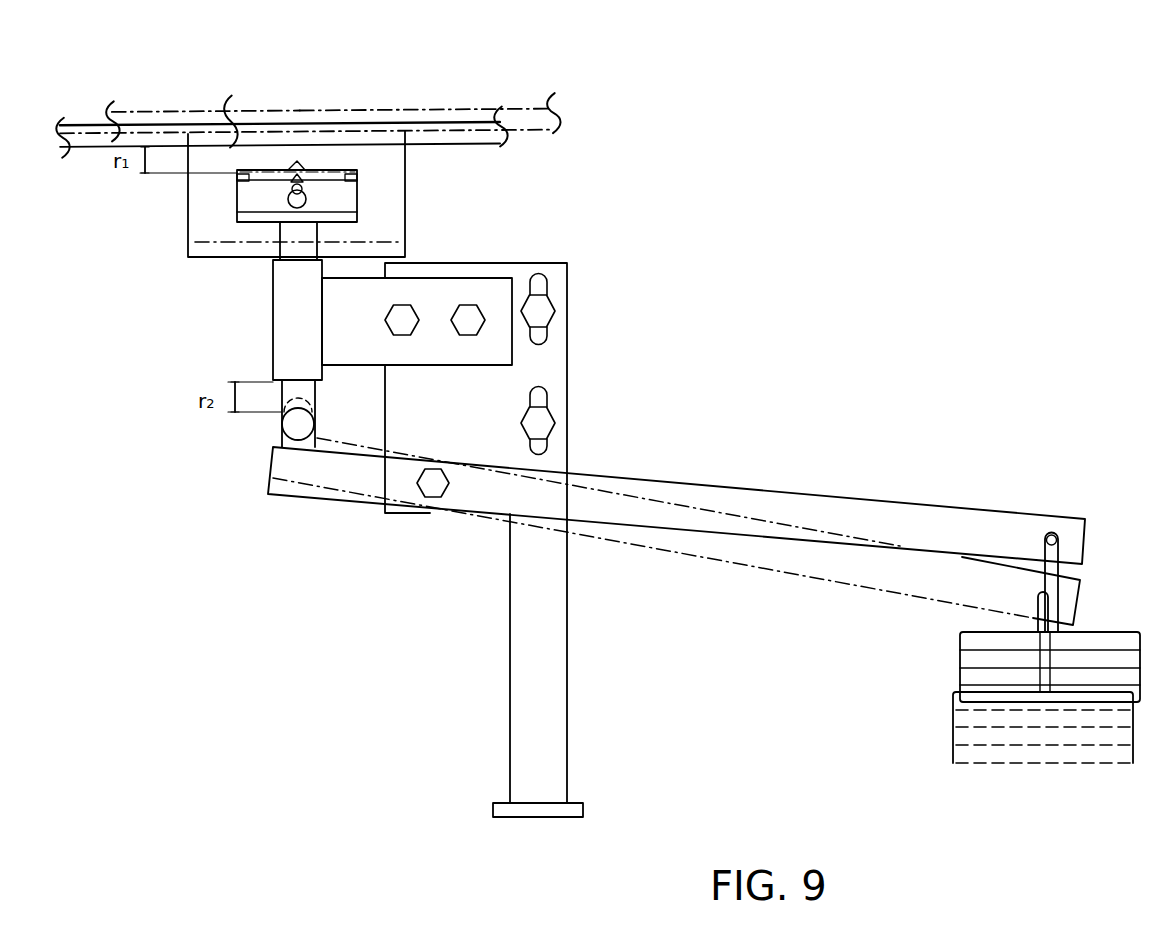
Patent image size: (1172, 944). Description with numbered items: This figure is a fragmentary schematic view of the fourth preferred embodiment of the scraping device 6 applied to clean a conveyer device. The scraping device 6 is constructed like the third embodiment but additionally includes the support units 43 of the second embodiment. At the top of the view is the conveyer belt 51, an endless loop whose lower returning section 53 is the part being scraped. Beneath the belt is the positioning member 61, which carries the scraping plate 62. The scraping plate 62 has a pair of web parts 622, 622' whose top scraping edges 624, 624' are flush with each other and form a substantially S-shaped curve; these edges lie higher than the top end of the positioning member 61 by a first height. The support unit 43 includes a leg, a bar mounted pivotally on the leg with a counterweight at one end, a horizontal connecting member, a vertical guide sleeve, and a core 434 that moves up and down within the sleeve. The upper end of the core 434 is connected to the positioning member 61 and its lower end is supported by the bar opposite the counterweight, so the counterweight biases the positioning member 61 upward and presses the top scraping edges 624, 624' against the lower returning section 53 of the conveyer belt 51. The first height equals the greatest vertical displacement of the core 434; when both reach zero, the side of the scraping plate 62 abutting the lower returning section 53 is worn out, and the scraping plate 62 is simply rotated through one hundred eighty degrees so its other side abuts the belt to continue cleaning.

The scraping device 6 is at (175, 273).
The support unit 43 is at (645, 268).
The conveyer belt 51 is at (312, 110).
The lower returning section 53 is at (485, 148).
The positioning member 61 is at (303, 177).
The scraping plate 62 is at (407, 227).
The web part 622 is at (257, 194).
The web part 622' is at (361, 196).
The top scraping edge 624 is at (203, 102).
The top scraping edge 624' is at (426, 94).
The core 434 is at (277, 405).